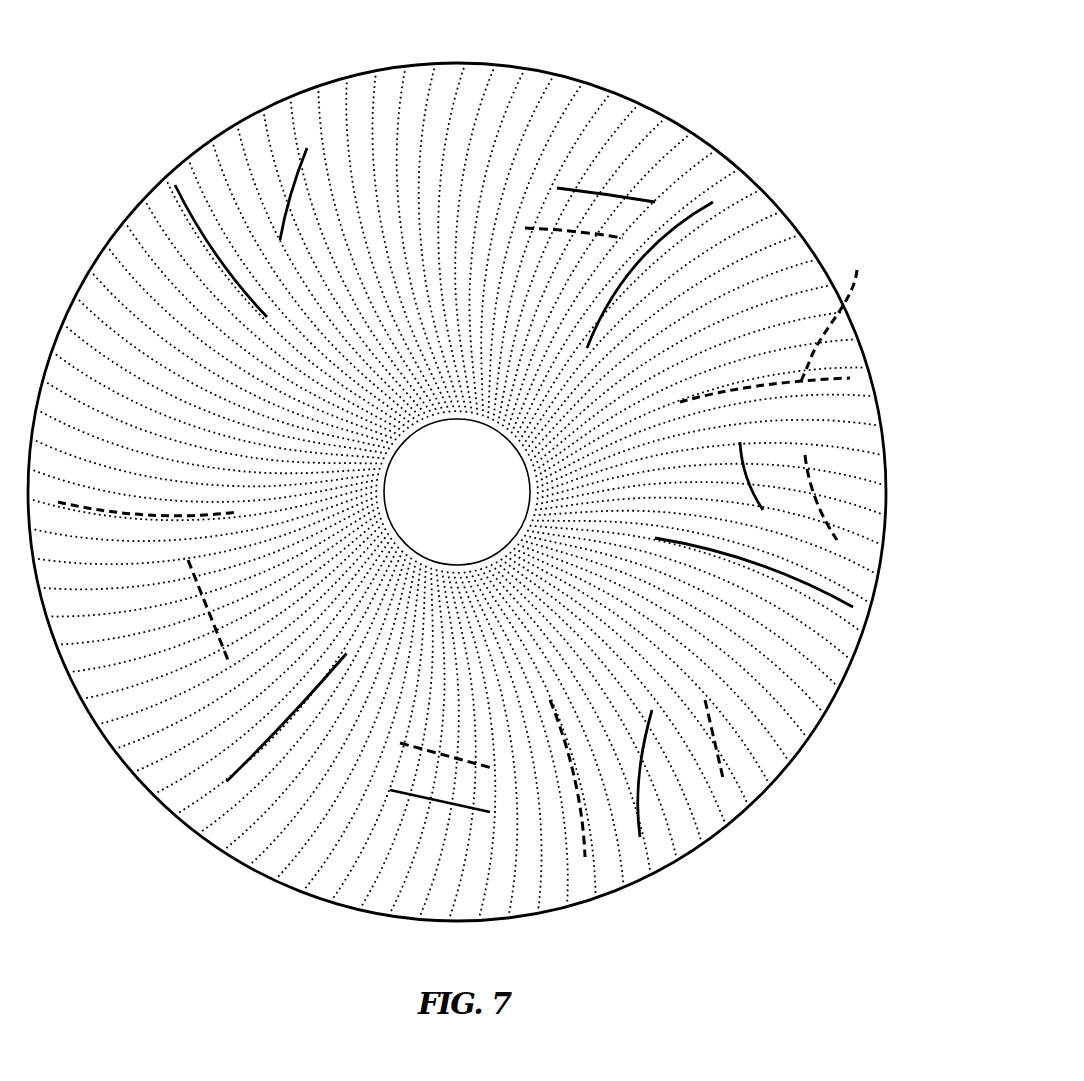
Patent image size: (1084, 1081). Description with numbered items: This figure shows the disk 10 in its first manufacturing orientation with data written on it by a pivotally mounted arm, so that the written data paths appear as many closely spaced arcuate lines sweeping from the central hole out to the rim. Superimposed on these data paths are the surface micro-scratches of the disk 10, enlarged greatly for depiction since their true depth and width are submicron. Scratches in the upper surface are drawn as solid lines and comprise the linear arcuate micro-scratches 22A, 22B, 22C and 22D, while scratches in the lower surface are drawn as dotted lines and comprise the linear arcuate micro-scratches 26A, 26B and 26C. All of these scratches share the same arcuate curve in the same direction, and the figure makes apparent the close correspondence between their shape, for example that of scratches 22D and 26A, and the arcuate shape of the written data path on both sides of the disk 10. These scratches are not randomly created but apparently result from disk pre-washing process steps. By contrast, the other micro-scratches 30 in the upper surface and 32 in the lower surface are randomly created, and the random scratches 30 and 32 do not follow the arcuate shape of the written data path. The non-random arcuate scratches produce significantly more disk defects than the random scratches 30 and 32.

The disk 10 is at (682, 82).
The upper surface linear arcuate micro-scratch 22A is at (690, 223).
The upper surface linear arcuate micro-scratch 22B is at (836, 606).
The upper surface linear arcuate micro-scratch 22C is at (226, 783).
The upper surface linear arcuate micro-scratch 22D is at (188, 196).
The lower surface linear arcuate micro-scratch 26A is at (778, 322).
The lower surface linear arcuate micro-scratch 26B is at (580, 808).
The lower surface linear arcuate micro-scratch 26C is at (90, 505).
The random upper surface micro-scratch 30 is at (641, 812).
The random lower surface micro-scratch 32 is at (710, 737).